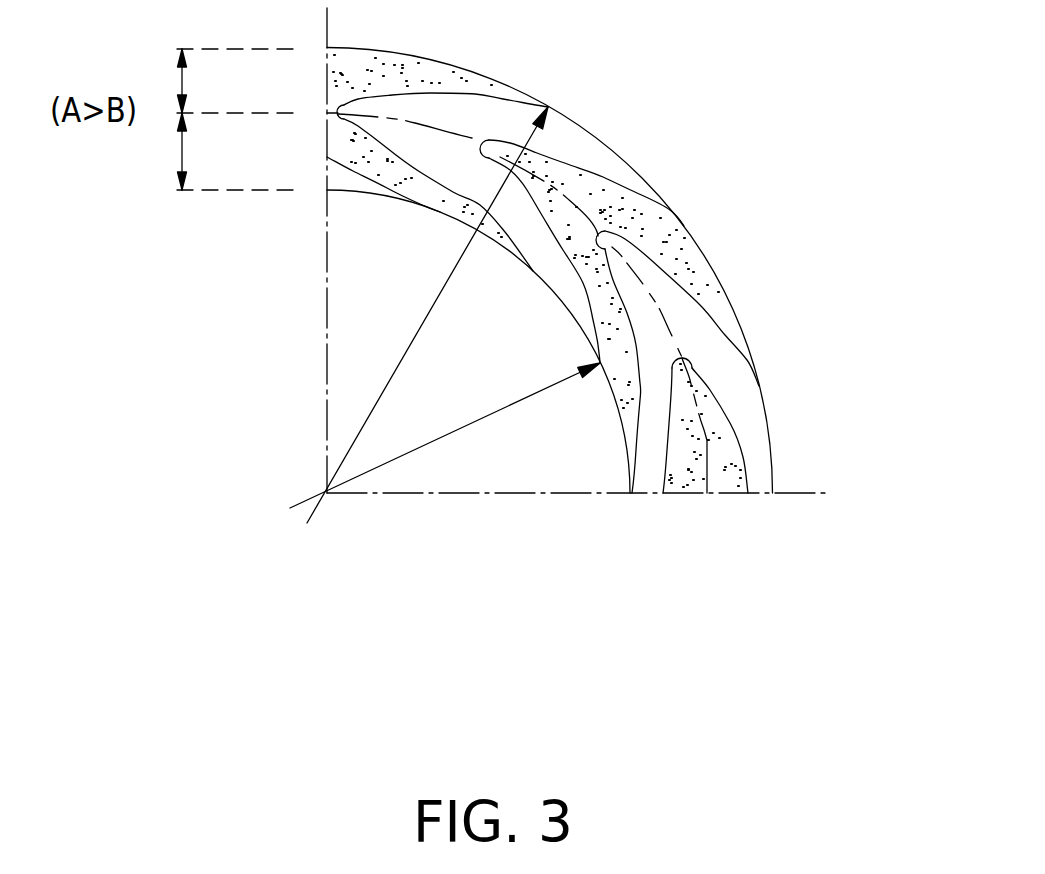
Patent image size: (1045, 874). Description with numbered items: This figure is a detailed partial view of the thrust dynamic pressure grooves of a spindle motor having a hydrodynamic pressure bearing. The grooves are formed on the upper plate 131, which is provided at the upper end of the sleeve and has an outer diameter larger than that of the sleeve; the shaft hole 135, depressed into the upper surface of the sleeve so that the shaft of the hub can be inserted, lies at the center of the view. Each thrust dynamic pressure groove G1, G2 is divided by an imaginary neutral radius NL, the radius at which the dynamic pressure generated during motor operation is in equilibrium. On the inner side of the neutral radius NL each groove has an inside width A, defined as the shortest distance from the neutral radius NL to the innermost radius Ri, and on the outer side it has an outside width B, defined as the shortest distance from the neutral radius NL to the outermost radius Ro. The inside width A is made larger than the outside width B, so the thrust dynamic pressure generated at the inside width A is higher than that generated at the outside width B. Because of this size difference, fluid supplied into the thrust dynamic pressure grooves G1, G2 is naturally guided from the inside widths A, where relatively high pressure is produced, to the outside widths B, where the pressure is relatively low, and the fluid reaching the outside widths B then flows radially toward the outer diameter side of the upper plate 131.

The upper plate 131 is at (737, 318).
The shaft hole 135 is at (626, 427).
The neutral radius NL is at (667, 320).
The thrust dynamic pressure groove G1 is at (580, 152).
The thrust dynamic pressure groove G2 is at (580, 152).
The innermost radius Ri is at (432, 435).
The outermost radius Ro is at (427, 332).
The inside width A is at (166, 151).
The outside width B is at (167, 81).